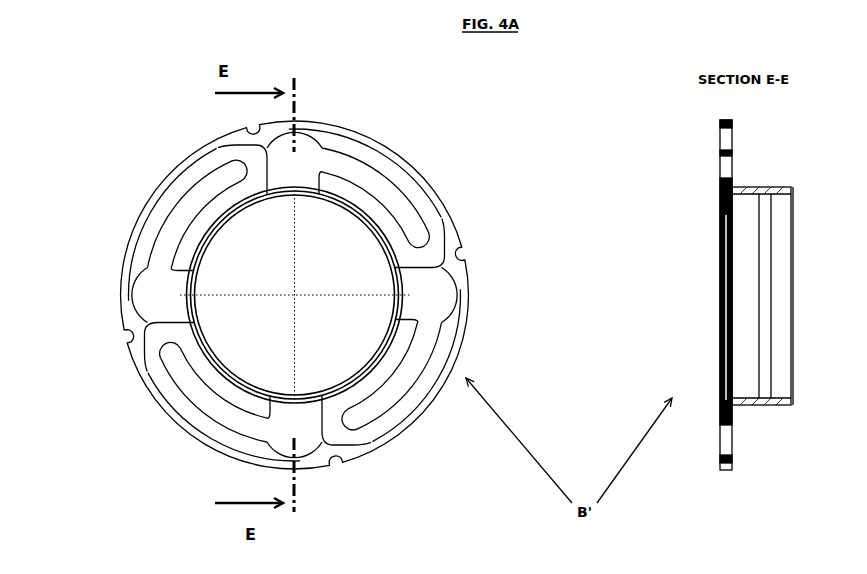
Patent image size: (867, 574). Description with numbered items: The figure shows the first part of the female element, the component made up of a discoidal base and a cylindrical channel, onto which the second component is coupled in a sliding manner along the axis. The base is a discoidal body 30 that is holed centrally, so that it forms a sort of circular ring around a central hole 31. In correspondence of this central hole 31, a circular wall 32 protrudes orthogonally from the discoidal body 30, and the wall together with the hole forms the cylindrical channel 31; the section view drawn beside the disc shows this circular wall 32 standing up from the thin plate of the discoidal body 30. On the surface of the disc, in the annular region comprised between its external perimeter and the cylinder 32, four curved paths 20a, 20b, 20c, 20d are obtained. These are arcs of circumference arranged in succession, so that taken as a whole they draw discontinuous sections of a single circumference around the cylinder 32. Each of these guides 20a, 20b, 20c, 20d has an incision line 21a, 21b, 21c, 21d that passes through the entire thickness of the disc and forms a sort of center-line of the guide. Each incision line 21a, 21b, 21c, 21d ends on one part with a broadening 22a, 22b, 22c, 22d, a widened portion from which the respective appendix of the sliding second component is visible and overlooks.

The curved path 20a is at (183, 203).
The curved path 20b is at (160, 374).
The curved path 20c is at (420, 195).
The curved path 20d is at (385, 441).
The incision line 21a is at (163, 247).
The incision line 21b is at (205, 400).
The incision line 21c is at (348, 167).
The incision line 21d is at (418, 354).
The broadening 22a is at (150, 302).
The broadening 22b is at (303, 422).
The broadening 22c is at (300, 167).
The broadening 22d is at (432, 297).
The discoidal body 30 is at (197, 437).
The central hole 31 is at (326, 268).
The circular wall 32 is at (763, 407).